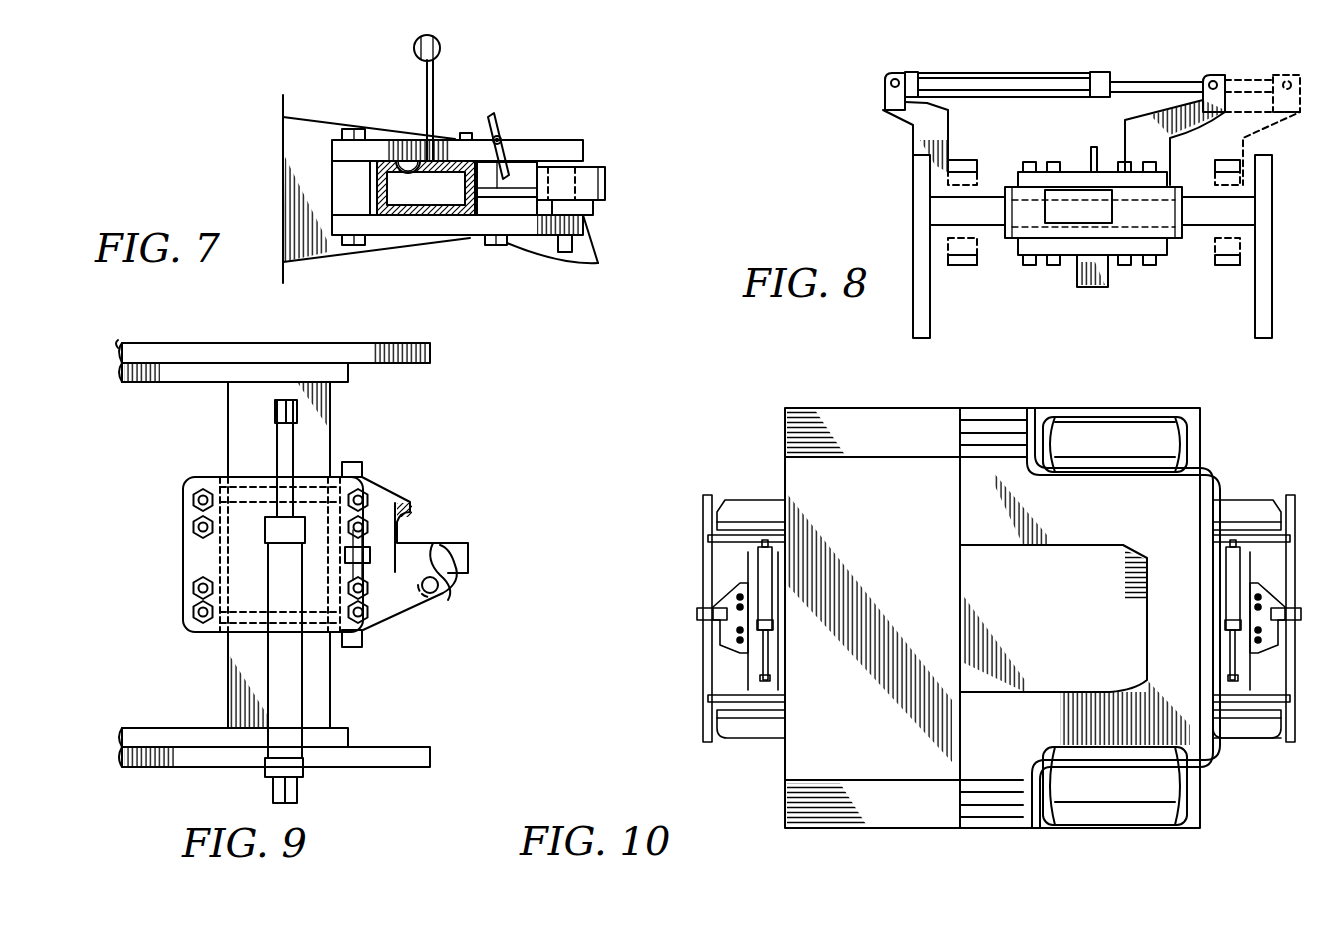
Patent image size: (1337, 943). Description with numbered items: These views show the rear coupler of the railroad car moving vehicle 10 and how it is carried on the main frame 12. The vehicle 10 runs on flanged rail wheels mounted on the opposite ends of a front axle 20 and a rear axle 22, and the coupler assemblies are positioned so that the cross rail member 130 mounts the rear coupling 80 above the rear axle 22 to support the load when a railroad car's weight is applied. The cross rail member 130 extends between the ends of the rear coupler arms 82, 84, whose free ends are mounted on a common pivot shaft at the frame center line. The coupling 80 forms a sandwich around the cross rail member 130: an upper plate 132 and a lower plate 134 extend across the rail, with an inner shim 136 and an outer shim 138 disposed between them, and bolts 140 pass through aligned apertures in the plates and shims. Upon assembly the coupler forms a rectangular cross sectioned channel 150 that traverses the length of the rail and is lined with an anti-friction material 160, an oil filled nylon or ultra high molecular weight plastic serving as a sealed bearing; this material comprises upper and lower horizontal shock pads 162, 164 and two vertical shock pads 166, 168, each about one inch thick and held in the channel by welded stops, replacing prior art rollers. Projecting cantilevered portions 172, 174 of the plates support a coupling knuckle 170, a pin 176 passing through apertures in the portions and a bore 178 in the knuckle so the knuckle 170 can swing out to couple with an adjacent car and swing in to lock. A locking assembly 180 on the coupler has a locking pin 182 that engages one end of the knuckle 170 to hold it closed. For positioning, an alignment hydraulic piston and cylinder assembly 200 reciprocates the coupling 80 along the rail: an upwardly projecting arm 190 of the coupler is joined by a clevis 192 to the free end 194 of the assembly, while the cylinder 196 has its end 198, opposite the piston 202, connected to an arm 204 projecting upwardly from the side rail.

In FIG. 10, the railroad car moving vehicle 10 is at (1246, 451).
In FIG. 10, the main frame 12 is at (1267, 697).
In FIG. 10, the front axle 20 is at (1247, 738).
In FIG. 10, the rear axle 22 is at (732, 728).
In FIG. 8, the rear coupling 80 is at (1035, 255).
In FIG. 9, the rear coupling 80 is at (393, 620).
In FIG. 8, the rear coupler arm 82 is at (1272, 200).
In FIG. 8, the rear coupler arm 84 is at (913, 200).
In FIG. 7, the cross rail member 130 is at (442, 196).
In FIG. 8, the cross rail member 130 is at (993, 225).
In FIG. 9, the cross rail member 130 is at (330, 430).
In FIG. 7, the upper plate 132 is at (445, 147).
In FIG. 7, the lower plate 134 is at (382, 228).
In FIG. 7, the inner shim 136 is at (340, 200).
In FIG. 7, the outer shim 138 is at (525, 205).
In FIG. 7, the bolts 140 is at (347, 130).
In FIG. 7, the rectangular cross sectioned channel 150 is at (405, 162).
In FIG. 7, the anti-friction material 160 is at (463, 163).
In FIG. 7, the upper horizontal shock pad 162 is at (410, 163).
In FIG. 7, the lower horizontal shock pad 164 is at (408, 215).
In FIG. 7, the vertical shock pad 166 is at (373, 183).
In FIG. 7, the vertical shock pad 168 is at (452, 210).
In FIG. 7, the coupling knuckle 170 is at (602, 193).
In FIG. 7, the projecting cantilevered portion 172 is at (577, 150).
In FIG. 7, the projecting cantilevered portion 174 is at (573, 227).
In FIG. 7, the pin 176 is at (578, 248).
In FIG. 7, the bore 178 is at (577, 180).
In FIG. 7, the locking assembly 180 is at (502, 127).
In FIG. 9, the locking assembly 180 is at (370, 548).
In FIG. 7, the locking pin 182 is at (520, 177).
In FIG. 8, the upwardly projecting arm 190 is at (1133, 140).
In FIG. 7, the clevis 192 is at (440, 45).
In FIG. 8, the free end 194 is at (1215, 75).
In FIG. 8, the cylinder 196 is at (963, 73).
In FIG. 8, the end 198 is at (887, 77).
In FIG. 8, the alignment hydraulic piston and cylinder assembly 200 is at (1031, 71).
In FIG. 9, the alignment hydraulic piston and cylinder assembly 200 is at (282, 683).
In FIG. 8, the piston 202 is at (1143, 81).
In FIG. 8, the arm 204 is at (900, 125).